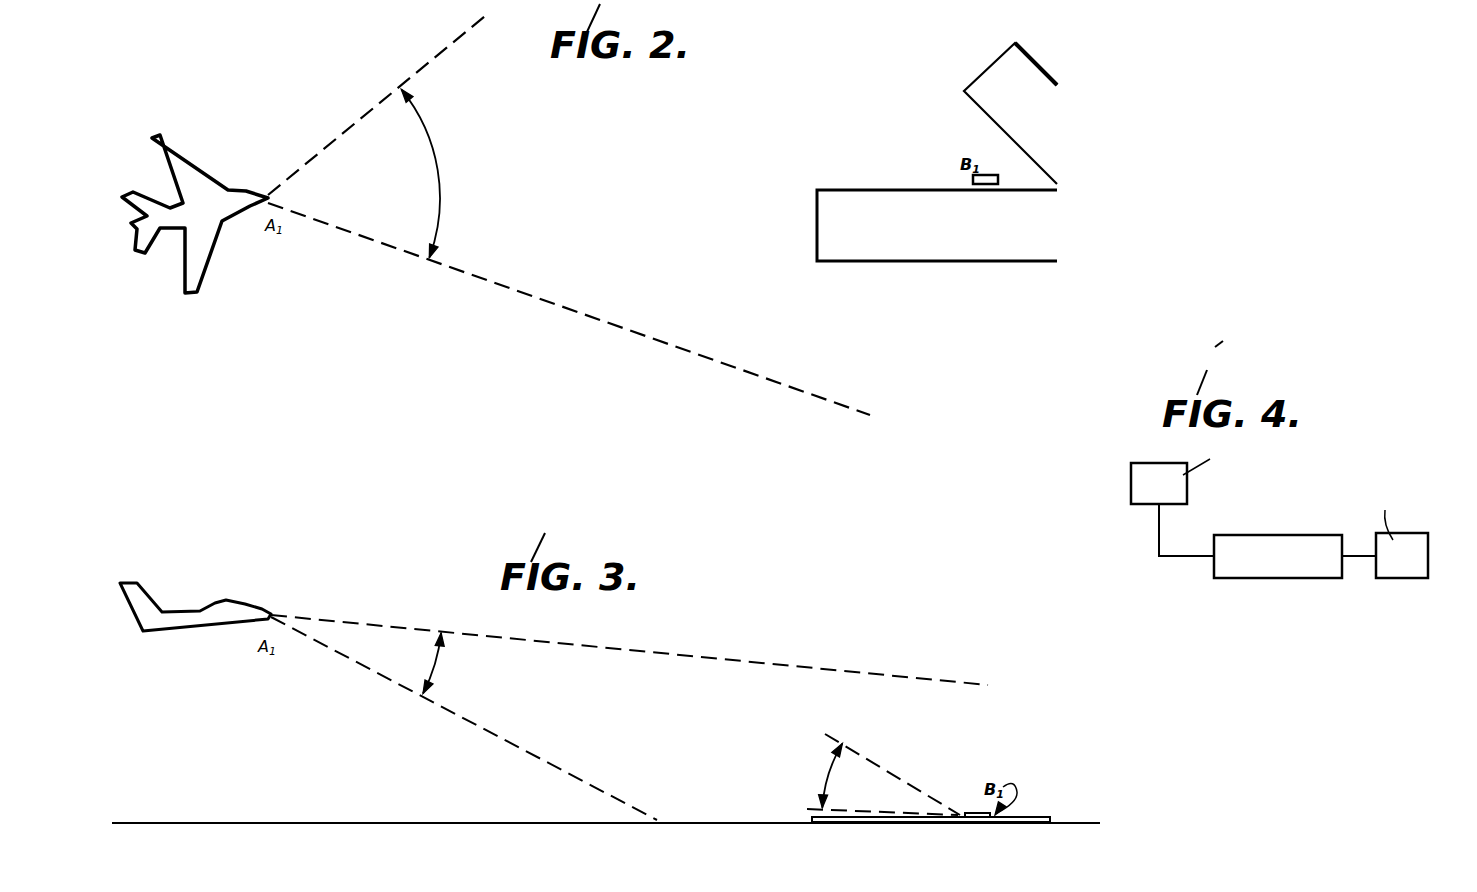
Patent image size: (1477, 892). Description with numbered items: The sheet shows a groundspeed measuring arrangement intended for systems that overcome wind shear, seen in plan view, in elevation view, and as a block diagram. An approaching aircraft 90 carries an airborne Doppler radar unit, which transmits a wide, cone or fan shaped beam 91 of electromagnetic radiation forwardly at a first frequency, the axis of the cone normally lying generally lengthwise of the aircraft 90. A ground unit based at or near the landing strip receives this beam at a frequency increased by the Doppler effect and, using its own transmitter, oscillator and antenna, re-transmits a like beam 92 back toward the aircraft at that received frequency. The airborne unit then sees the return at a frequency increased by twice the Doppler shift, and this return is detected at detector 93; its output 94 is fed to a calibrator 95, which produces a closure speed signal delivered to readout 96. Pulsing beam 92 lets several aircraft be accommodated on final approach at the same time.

In FIG. 2, the aircraft 90 is at (167, 250).
In FIG. 3, the aircraft 90 is at (188, 640).
In FIG. 2, the beam 91 is at (427, 173).
In FIG. 3, the beam 91 is at (446, 663).
In FIG. 3, the re-transmitted beam 92 is at (842, 775).
In FIG. 4, the detector 93 is at (1189, 496).
In FIG. 4, the output 94 is at (1159, 541).
In FIG. 4, the calibrator 95 is at (1267, 580).
In FIG. 4, the readout 96 is at (1388, 578).